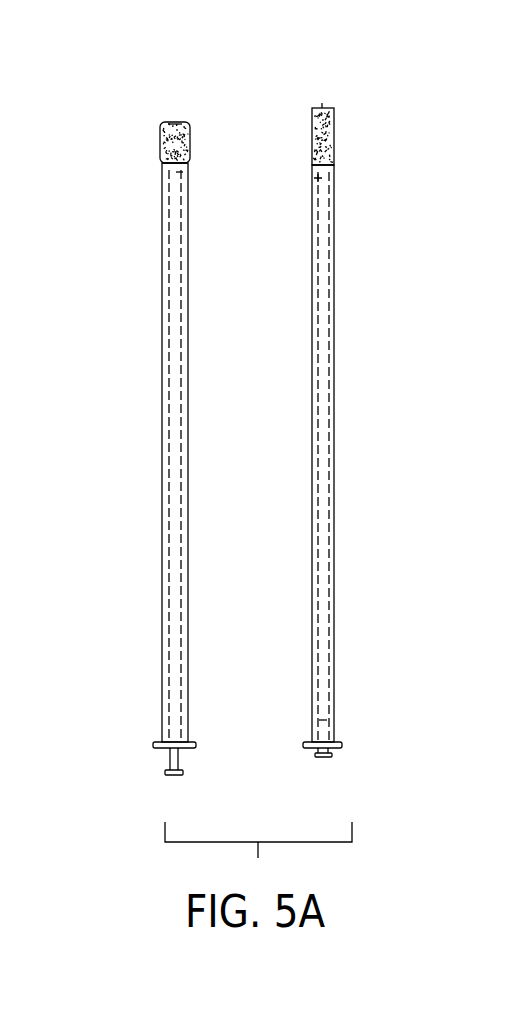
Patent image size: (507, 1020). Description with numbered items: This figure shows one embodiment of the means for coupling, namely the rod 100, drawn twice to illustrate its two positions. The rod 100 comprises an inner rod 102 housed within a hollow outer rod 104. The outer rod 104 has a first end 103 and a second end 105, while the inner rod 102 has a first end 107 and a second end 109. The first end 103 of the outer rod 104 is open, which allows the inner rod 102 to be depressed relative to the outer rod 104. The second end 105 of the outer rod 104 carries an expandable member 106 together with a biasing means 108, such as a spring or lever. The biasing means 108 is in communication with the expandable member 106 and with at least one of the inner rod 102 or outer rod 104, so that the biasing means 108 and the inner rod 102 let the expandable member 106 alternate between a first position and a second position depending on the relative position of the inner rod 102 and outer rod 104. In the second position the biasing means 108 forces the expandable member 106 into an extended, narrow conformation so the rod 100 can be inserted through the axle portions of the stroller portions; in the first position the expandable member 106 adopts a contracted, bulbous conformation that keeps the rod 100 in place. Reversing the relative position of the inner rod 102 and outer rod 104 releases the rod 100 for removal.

The rod 100 is at (146, 299).
The inner rod 102 is at (164, 758).
The first end of the outer rod 103 is at (162, 724).
The outer rod 104 is at (158, 633).
The second end of the outer rod 105 is at (160, 170).
The expandable member 106 is at (160, 140).
The first end of the inner rod 107 is at (178, 765).
The biasing means 108 is at (190, 140).
The second end of the inner rod 109 is at (185, 172).